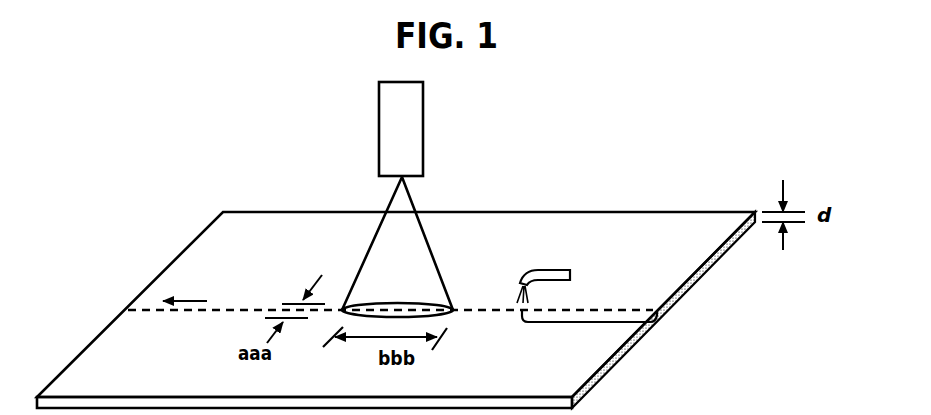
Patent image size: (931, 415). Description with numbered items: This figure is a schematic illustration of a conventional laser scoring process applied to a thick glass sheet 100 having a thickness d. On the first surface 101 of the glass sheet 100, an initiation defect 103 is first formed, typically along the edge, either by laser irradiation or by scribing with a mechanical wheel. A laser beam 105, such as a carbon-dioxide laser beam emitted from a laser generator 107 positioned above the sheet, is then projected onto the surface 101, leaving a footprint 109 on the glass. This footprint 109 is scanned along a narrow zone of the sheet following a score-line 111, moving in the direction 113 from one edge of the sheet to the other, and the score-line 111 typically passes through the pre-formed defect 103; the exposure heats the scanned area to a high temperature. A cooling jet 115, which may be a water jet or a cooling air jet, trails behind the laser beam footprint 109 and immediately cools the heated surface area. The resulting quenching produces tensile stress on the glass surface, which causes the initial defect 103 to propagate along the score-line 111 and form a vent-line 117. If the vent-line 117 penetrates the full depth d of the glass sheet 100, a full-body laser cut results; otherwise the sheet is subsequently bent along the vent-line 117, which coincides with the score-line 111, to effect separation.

The glass sheet 100 is at (618, 182).
The first surface 101 is at (252, 212).
The initiation defect 103 is at (672, 300).
The laser beam 105 is at (388, 203).
The laser generator 107 is at (420, 123).
The footprint 109 is at (410, 302).
The score-line 111 is at (230, 308).
The direction 113 is at (188, 301).
The cooling jet 115 is at (522, 280).
The vent-line 117 is at (573, 323).